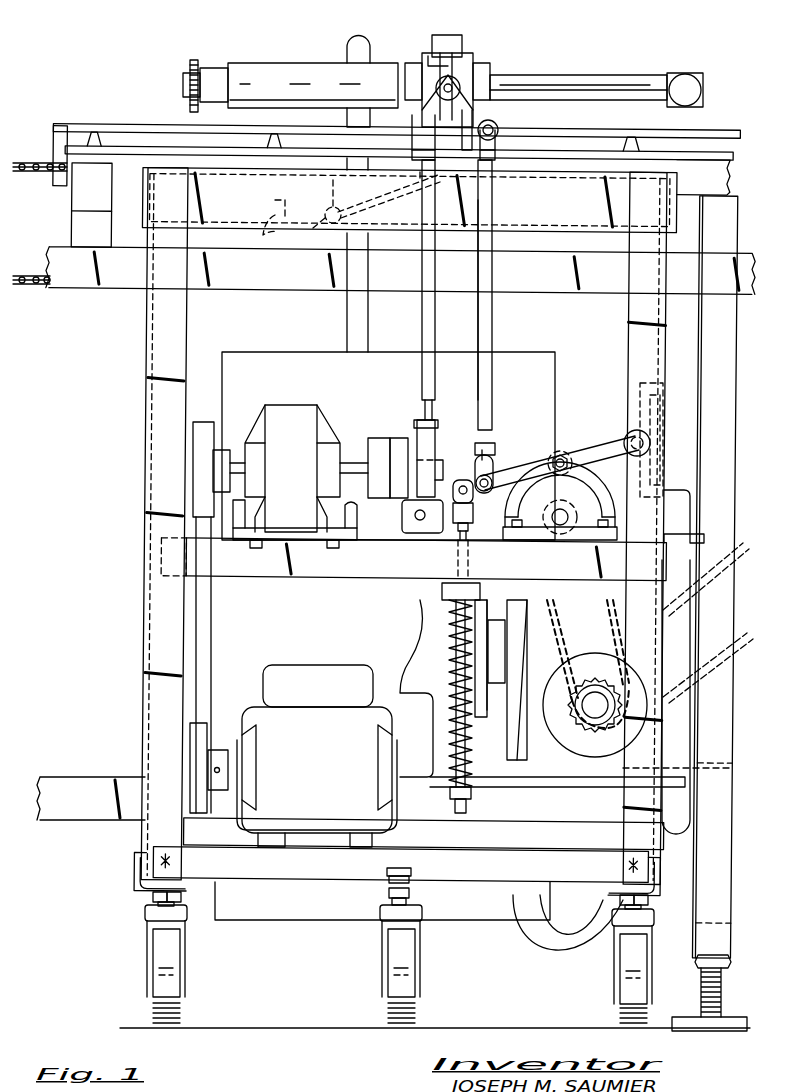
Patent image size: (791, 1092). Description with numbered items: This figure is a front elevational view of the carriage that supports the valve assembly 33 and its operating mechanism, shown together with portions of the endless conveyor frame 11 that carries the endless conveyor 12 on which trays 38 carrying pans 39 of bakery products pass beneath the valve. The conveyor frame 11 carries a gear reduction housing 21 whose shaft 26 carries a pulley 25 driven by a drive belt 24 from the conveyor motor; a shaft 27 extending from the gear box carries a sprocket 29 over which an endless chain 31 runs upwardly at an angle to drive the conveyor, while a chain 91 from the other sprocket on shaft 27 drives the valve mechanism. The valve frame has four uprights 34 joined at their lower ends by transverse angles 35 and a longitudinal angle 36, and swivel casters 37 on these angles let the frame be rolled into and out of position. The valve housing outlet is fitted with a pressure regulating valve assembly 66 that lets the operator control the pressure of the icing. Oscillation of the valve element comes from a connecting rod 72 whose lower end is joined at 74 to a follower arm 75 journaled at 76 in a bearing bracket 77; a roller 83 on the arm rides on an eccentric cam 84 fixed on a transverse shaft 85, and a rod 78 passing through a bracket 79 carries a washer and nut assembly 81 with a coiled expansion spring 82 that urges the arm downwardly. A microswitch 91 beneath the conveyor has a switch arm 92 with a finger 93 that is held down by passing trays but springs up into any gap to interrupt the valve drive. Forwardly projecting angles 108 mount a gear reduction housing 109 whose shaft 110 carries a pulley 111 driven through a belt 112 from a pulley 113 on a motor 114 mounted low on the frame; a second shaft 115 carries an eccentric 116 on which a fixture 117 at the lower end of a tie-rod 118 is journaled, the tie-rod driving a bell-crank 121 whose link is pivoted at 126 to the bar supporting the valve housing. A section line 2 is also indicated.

The section line 2 is at (8, 52).
The endless conveyor frame 11 is at (83, 294).
The endless conveyor 12 is at (28, 162).
The gear reduction housing 21 is at (528, 688).
The drive belt 24 is at (484, 720).
The pulley 25 is at (490, 702).
The shaft of the gear train 26 is at (506, 664).
The shaft 27 is at (595, 705).
The sprocket 29 is at (576, 678).
The endless chain 31 is at (722, 652).
The valve assembly 33 is at (482, 53).
The uprights 34 is at (148, 434).
The transverse angles 35 is at (140, 880).
The longitudinal angles 36 is at (400, 865).
The swivel caster 37 is at (174, 1013).
The trays 38 is at (58, 145).
The pans 39 is at (145, 120).
The pressure regulating valve assembly 66 is at (443, 193).
The connecting rod 72 is at (492, 336).
The connection 74 is at (488, 478).
The follower arm 75 is at (531, 470).
The journal 76 is at (628, 432).
The bearing bracket 77 is at (650, 388).
The rod 78 is at (456, 540).
The bracket 79 is at (475, 580).
The washer and nut assembly 81 is at (474, 799).
The coiled expansion spring 82 is at (452, 786).
The roller 83 is at (562, 454).
The eccentric cam 84 is at (600, 504).
The shaft 85 is at (560, 526).
The microswitch 91 is at (555, 636).
The switch arm 92 is at (329, 213).
The finger 93 is at (388, 203).
The forwardly projecting angles 108 is at (232, 544).
The gear reduction housing 109 is at (302, 400).
The shaft 110 is at (236, 464).
The pulley 111 is at (216, 424).
The belt 112 is at (206, 645).
The pulley 113 is at (216, 722).
The motor 114 is at (317, 756).
The shaft 115 is at (354, 462).
The eccentric 116 is at (440, 460).
The fixture 117 is at (420, 440).
The tie-rod 118 is at (434, 379).
The bell-crank 121 is at (436, 64).
The pivotal connection 126 is at (432, 38).